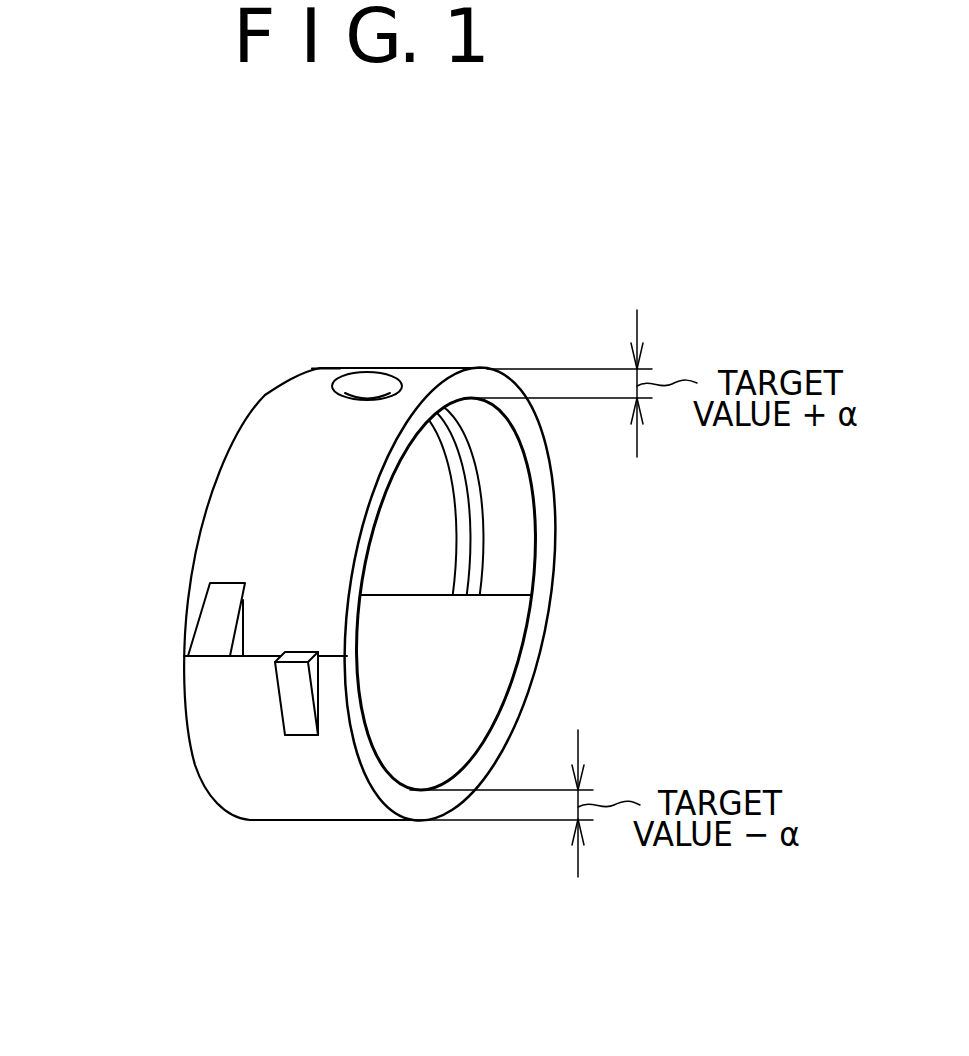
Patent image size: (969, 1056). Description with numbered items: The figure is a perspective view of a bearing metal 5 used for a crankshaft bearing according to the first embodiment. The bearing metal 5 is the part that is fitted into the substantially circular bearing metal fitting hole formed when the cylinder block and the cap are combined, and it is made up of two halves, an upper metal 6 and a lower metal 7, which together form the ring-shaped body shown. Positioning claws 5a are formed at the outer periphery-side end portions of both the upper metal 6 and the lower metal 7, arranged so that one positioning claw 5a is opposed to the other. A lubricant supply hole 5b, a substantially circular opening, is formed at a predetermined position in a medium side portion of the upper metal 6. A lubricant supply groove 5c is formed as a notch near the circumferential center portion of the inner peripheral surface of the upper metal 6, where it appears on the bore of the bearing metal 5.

The bearing metal 5 is at (257, 495).
The positioning claws 5a is at (300, 703).
The lubricant supply hole 5b is at (372, 385).
The lubricant supply groove 5c is at (480, 525).
The upper metal 6 is at (325, 368).
The lower metal 7 is at (270, 800).